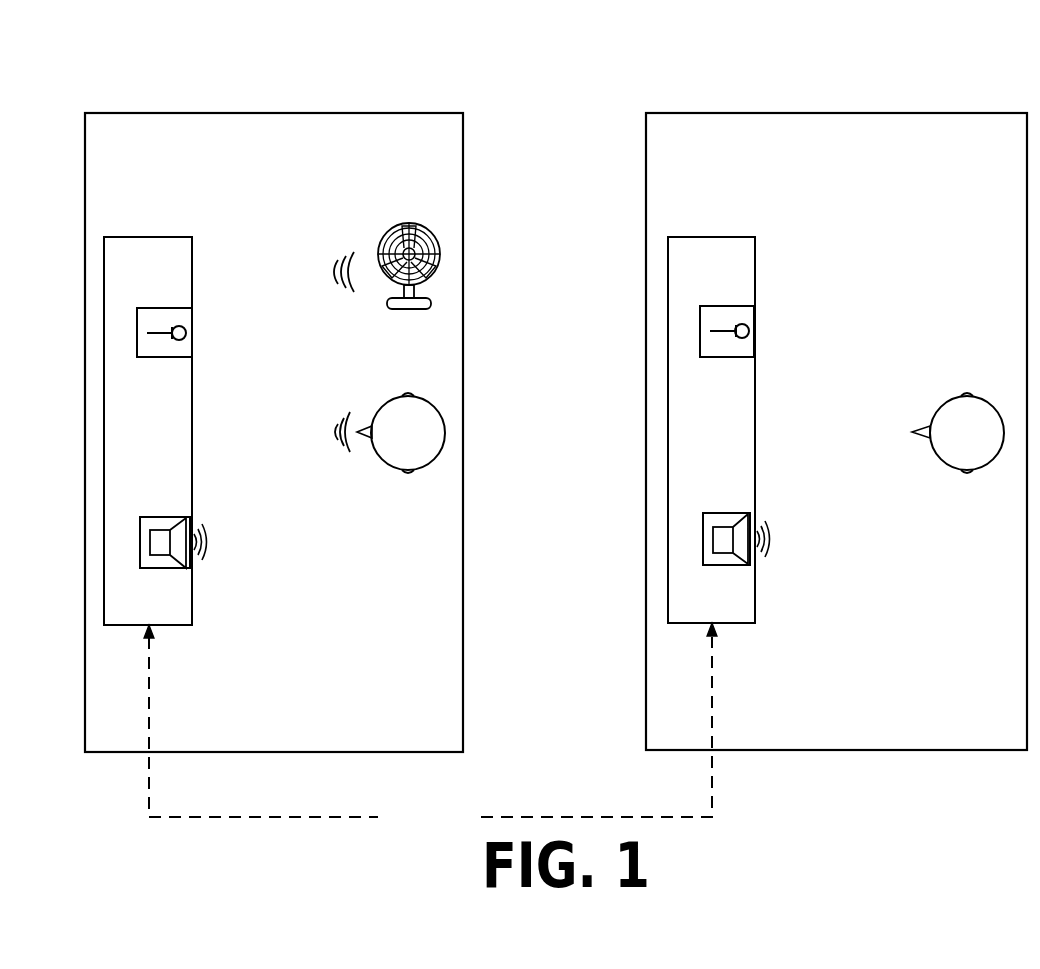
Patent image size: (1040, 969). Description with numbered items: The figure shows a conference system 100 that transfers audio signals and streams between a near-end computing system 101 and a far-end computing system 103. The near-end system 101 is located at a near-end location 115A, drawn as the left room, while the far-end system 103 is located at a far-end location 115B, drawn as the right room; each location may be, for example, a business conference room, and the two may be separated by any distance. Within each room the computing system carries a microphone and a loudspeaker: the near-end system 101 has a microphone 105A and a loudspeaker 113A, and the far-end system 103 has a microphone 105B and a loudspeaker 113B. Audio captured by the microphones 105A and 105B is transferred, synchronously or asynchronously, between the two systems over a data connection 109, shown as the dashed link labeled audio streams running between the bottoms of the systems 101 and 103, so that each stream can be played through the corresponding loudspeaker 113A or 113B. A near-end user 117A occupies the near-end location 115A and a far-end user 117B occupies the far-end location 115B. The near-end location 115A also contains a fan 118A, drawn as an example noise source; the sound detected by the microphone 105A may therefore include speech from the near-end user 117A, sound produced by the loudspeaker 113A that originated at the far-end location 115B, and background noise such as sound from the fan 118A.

The conference system 100 is at (86, 90).
The near-end computing system 101 is at (148, 236).
The far-end computing system 103 is at (710, 236).
The microphone 105A is at (165, 308).
The microphone 105B is at (728, 306).
The data connection 109 is at (525, 815).
The loudspeaker 113A is at (162, 516).
The loudspeaker 113B is at (725, 513).
The near-end location 115A is at (424, 112).
The far-end location 115B is at (988, 112).
The near-end user 117A is at (408, 420).
The far-end user 117B is at (966, 420).
The fan 118A is at (409, 224).